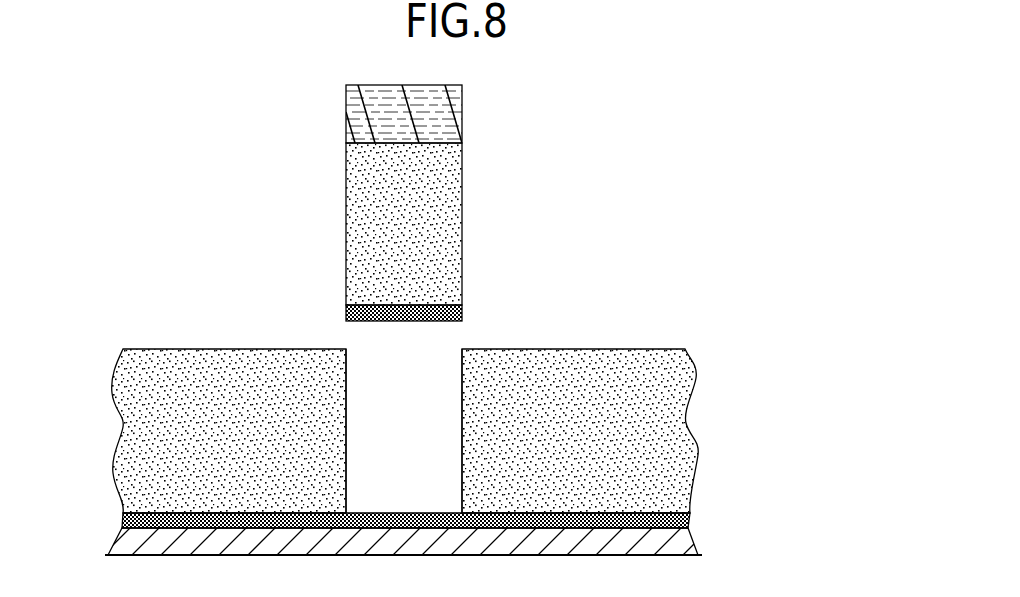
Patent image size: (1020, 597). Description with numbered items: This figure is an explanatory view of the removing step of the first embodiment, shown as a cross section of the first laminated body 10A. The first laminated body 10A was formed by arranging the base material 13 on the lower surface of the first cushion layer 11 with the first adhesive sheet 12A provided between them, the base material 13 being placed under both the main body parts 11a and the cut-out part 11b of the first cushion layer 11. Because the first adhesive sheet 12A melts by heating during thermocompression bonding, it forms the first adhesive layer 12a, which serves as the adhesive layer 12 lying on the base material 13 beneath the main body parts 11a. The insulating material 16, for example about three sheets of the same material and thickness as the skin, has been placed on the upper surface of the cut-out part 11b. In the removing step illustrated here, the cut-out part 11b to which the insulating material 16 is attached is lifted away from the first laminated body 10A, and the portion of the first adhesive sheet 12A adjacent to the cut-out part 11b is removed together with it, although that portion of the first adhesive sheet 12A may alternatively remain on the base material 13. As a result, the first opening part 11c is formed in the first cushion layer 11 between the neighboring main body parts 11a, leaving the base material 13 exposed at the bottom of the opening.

The first laminated body 10A is at (680, 263).
The insulating material 16 is at (463, 118).
The cut-out part 11b is at (472, 237).
The first adhesive sheet 12A is at (470, 312).
The first cushion layer 11 is at (410, 394).
The main body part 11a is at (222, 416).
The first opening part 11c is at (350, 404).
The first adhesive layer 12a is at (693, 520).
The adhesive layer 12 is at (484, 503).
The base material 13 is at (702, 542).